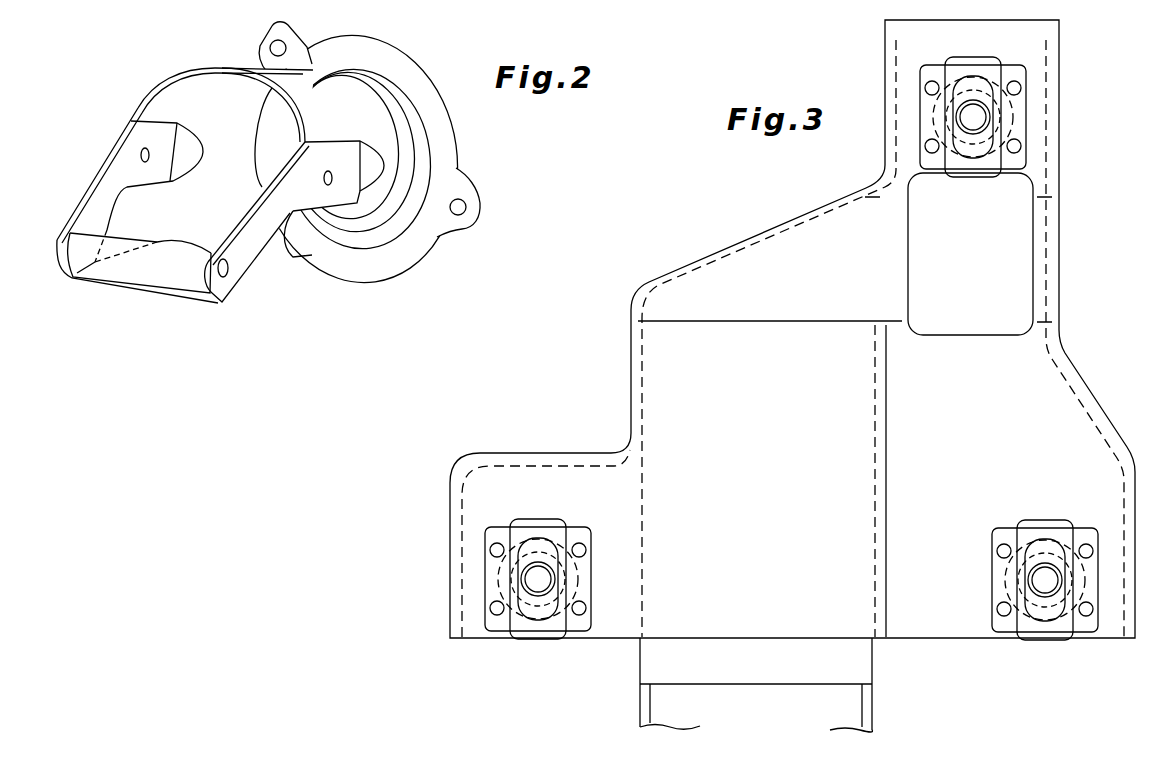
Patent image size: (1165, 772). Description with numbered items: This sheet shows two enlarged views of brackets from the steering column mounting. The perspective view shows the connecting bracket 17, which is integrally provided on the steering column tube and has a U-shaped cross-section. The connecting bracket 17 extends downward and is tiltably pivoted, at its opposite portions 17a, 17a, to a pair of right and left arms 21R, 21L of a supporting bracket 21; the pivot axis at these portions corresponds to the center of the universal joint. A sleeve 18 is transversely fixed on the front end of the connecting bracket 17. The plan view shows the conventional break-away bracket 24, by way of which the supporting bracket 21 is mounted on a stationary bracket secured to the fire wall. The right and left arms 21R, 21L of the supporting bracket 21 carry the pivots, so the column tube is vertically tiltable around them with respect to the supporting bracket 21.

In FIG. 2, the connecting bracket 17 is at (268, 168).
In FIG. 2, the opposite portions 17a is at (140, 158).
In FIG. 2, the sleeve 18 is at (137, 260).
In FIG. 3, the break-away bracket 24 is at (792, 376).
In FIG. 3, the supporting bracket 21 is at (755, 685).
In FIG. 3, the left arm 21L is at (650, 697).
In FIG. 3, the right arm 21R is at (862, 700).